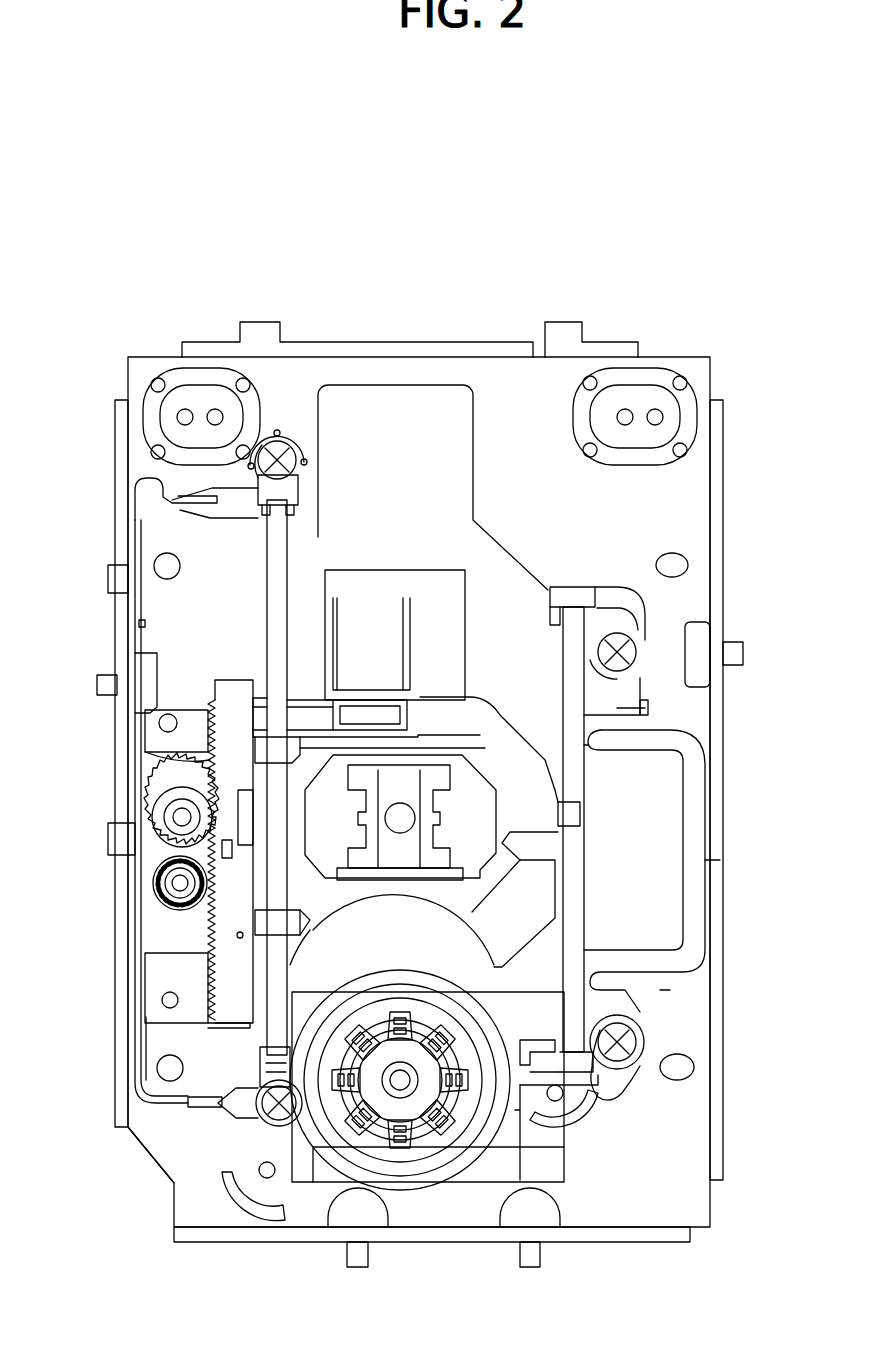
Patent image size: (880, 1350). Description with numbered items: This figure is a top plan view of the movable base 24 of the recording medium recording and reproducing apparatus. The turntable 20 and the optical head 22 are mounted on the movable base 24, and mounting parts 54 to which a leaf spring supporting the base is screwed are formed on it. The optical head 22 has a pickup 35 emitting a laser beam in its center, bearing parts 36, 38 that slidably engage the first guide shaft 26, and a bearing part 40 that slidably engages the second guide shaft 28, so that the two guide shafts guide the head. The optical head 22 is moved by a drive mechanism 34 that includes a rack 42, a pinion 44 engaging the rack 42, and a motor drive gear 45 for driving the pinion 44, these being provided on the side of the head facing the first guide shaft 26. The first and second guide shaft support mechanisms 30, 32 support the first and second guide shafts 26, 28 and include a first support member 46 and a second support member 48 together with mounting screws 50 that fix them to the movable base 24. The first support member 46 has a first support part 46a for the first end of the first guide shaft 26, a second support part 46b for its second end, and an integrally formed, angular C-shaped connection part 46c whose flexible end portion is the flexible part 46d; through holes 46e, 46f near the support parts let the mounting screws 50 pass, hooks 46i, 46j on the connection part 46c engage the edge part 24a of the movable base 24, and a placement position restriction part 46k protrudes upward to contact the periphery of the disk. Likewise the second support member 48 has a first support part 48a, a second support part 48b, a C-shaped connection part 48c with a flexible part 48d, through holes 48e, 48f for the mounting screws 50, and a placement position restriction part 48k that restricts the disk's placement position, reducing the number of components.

The turntable 20 is at (412, 1185).
The optical head 22 is at (490, 735).
The movable base 24 is at (722, 562).
The edge part 24a is at (118, 718).
The first guide shaft 26 is at (275, 605).
The second guide shaft 28 is at (577, 787).
The first guide shaft support mechanism 30 is at (160, 1117).
The second guide shaft support mechanism 32 is at (668, 993).
The drive mechanism 34 is at (150, 920).
The pickup 35 is at (400, 810).
The bearing part 36 is at (295, 930).
The bearing part 38 is at (275, 745).
The bearing part 40 is at (570, 822).
The rack 42 is at (210, 762).
The pinion 44 is at (155, 815).
The motor drive gear 45 is at (158, 885).
The first support member 46 is at (145, 1045).
The first support part 46a is at (258, 1065).
The second support part 46b is at (288, 493).
The connection part 46c is at (140, 637).
The flexible part 46d is at (148, 478).
The through hole 46e is at (257, 1117).
The through hole 46f is at (300, 452).
The hook 46i is at (110, 840).
The hook 46j is at (110, 575).
The placement position restriction part 46k is at (125, 672).
The second support member 48 is at (712, 862).
The first support part 48a is at (575, 1095).
The second support part 48b is at (577, 595).
The connection part 48c is at (692, 905).
The flexible part 48d is at (567, 745).
The through hole 48e is at (632, 1042).
The through hole 48f is at (640, 655).
The placement position restriction part 48k is at (650, 715).
The mounting screw 50 is at (285, 455).
The mounting part 54 is at (198, 395).